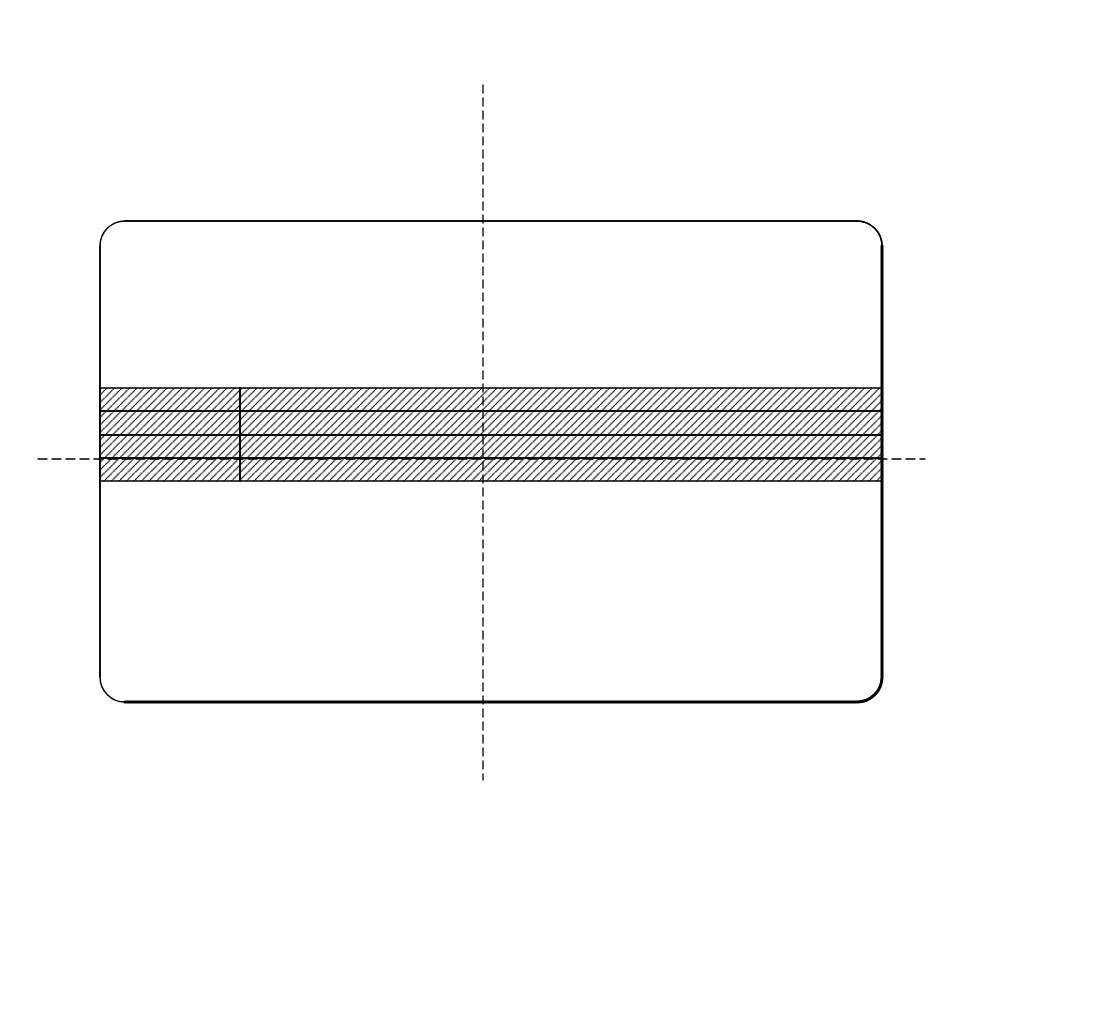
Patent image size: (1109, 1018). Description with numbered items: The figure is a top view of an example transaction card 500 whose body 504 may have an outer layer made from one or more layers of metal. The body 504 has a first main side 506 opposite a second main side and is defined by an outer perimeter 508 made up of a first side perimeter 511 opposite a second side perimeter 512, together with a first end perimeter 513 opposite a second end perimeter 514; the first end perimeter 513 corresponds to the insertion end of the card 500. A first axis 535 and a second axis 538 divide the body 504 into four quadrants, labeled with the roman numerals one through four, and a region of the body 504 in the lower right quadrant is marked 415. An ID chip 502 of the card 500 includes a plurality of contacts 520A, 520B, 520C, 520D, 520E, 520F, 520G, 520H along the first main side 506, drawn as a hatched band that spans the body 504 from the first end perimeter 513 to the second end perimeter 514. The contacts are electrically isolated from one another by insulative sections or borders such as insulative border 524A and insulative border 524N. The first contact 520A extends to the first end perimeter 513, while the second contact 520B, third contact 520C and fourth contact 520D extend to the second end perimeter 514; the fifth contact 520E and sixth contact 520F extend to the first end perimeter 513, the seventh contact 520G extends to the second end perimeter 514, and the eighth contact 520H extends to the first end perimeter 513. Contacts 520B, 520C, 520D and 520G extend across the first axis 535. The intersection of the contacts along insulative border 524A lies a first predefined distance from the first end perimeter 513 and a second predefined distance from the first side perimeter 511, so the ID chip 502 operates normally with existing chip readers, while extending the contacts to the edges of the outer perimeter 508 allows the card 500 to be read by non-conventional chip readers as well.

The transaction card 500 is at (716, 106).
The ID chip 502 is at (122, 428).
The body 504 is at (820, 210).
The first main side 506 is at (872, 282).
The outer perimeter 508 is at (768, 712).
The first side perimeter 511 is at (592, 220).
The second side perimeter 512 is at (620, 704).
The first end perimeter 513 is at (100, 614).
The second end perimeter 514 is at (883, 583).
The first axis 535 is at (485, 150).
The second axis 538 is at (902, 458).
The card region 415 is at (790, 598).
The first contact 520A is at (176, 398).
The second contact 520B is at (317, 395).
The third contact 520C is at (380, 420).
The fourth contact 520D is at (412, 452).
The fifth contact 520E is at (200, 450).
The sixth contact 520F is at (133, 408).
The seventh contact 520G is at (318, 478).
The eighth contact 520H is at (125, 481).
The insulative border 524A is at (250, 395).
The insulative border 524N is at (563, 435).